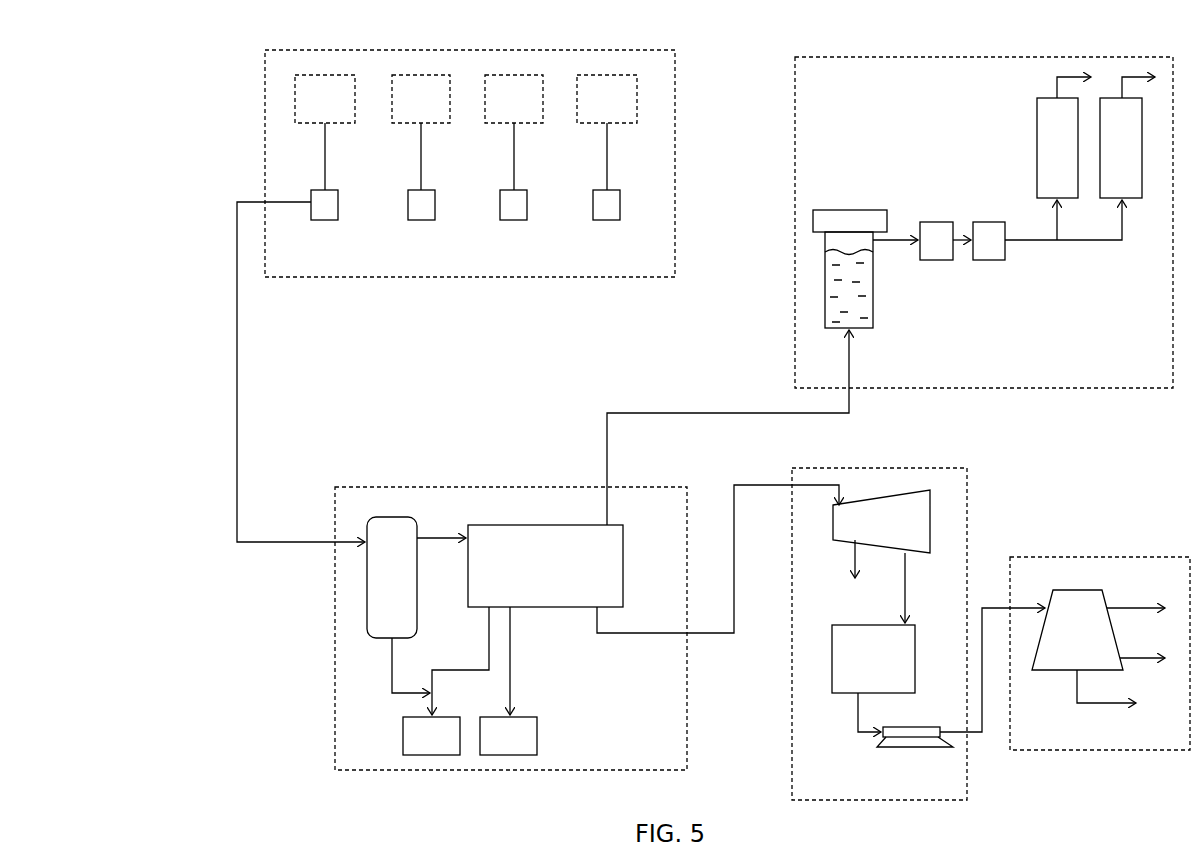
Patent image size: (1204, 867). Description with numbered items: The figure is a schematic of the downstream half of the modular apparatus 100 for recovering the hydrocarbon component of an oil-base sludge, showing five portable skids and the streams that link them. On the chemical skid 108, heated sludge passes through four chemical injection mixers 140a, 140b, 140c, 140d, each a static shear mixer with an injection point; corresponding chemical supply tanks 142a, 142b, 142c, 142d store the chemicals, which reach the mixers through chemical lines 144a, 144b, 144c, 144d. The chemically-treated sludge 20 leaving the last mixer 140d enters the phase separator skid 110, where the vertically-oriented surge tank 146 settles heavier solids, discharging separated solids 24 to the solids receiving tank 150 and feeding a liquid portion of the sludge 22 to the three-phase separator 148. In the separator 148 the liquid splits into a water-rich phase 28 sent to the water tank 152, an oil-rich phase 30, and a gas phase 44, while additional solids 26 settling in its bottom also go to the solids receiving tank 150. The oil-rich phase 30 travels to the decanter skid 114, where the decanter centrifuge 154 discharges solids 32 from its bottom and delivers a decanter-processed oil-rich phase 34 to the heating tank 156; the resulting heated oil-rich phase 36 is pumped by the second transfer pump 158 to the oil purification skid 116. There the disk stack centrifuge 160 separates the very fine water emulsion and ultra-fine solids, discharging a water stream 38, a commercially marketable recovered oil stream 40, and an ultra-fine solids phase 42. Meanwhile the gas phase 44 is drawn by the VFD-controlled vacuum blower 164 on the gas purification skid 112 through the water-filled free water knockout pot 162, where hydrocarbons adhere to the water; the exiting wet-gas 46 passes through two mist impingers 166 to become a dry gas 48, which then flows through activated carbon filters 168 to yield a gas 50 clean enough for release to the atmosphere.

The modular apparatus 100 is at (258, 37).
The chemically-treated sludge 20 is at (237, 200).
The liquid portion of the sludge 22 is at (456, 535).
The separated solids 24 is at (392, 676).
The additional solids 26 is at (489, 642).
The water-rich phase 28 is at (512, 655).
The oil-rich phase 30 is at (703, 636).
The solids 32 is at (853, 566).
The decanter-processed oil-rich phase 34 is at (908, 588).
The heated oil-rich phase 36 is at (856, 720).
The water stream 38 is at (1150, 605).
The recovered oil stream 40 is at (1158, 656).
The ultra-fine solids phase 42 is at (1120, 702).
The gas phase 44 is at (686, 413).
The wet-gas 46 is at (908, 244).
The dry gas 48 is at (1053, 244).
The gas 50 is at (1056, 86).
The chemical skid 108 is at (628, 270).
The phase separator skid 110 is at (636, 764).
The gas purification skid 112 is at (1125, 386).
The decanter skid 114 is at (915, 792).
The oil purification skid 116 is at (1138, 744).
The chemical injection mixer 140a is at (687, 418).
The chemical injection mixer 140b is at (500, 200).
The chemical injection mixer 140c is at (408, 200).
The chemical injection mixer 140d is at (311, 200).
The chemical supply tank 142a is at (582, 111).
The chemical supply tank 142b is at (490, 111).
The chemical supply tank 142c is at (397, 111).
The chemical supply tank 142d is at (300, 111).
The chemical line 144a is at (607, 162).
The chemical line 144b is at (514, 162).
The chemical line 144c is at (421, 162).
The chemical line 144d is at (325, 162).
The surge tank 146 is at (375, 592).
The three-phase separator 148 is at (538, 574).
The solids receiving tank 150 is at (415, 749).
The water tank 152 is at (492, 749).
The decanter centrifuge 154 is at (871, 534).
The heating tank 156 is at (856, 669).
The second transfer pump 158 is at (898, 746).
The disk stack centrifuge 160 is at (1061, 644).
The free water knockout pot 162 is at (873, 314).
The VFD-controlled vacuum blower 164 is at (866, 210).
The mist impinger 166 is at (940, 222).
The activated carbon filter 168 is at (1075, 160).